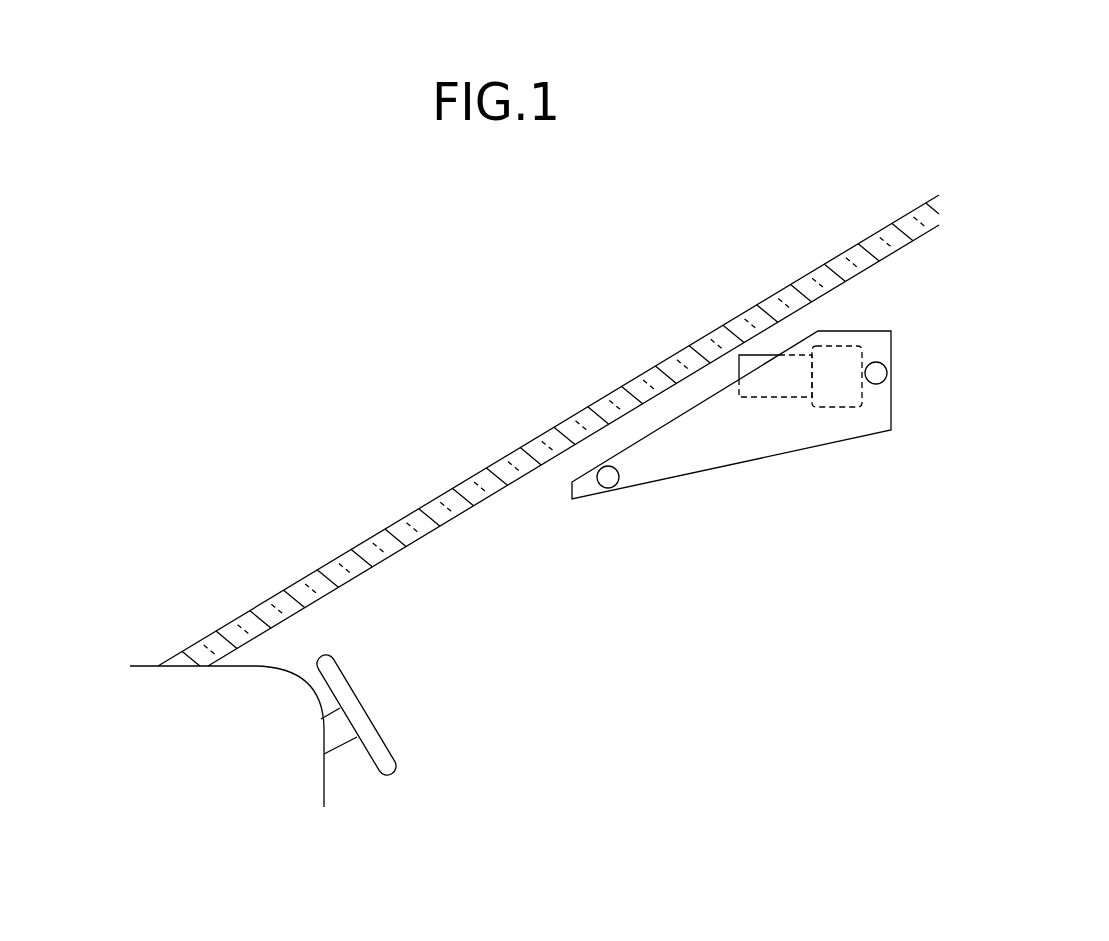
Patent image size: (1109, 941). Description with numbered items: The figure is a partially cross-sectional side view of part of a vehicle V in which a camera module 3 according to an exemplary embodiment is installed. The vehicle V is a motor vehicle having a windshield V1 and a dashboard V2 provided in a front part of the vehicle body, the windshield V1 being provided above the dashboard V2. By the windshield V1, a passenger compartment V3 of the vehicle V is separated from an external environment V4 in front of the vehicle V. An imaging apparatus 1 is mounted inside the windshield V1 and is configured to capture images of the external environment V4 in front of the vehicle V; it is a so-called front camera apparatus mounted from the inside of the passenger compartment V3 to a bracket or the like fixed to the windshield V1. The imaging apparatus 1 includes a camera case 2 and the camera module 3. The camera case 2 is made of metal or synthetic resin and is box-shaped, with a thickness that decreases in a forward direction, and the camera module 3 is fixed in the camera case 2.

The vehicle V is at (215, 255).
The windshield V1 is at (540, 456).
The dashboard V2 is at (323, 793).
The passenger compartment V3 is at (681, 599).
The external environment V4 is at (83, 441).
The imaging apparatus 1 is at (893, 438).
The camera case 2 is at (877, 412).
The camera module 3 is at (758, 355).